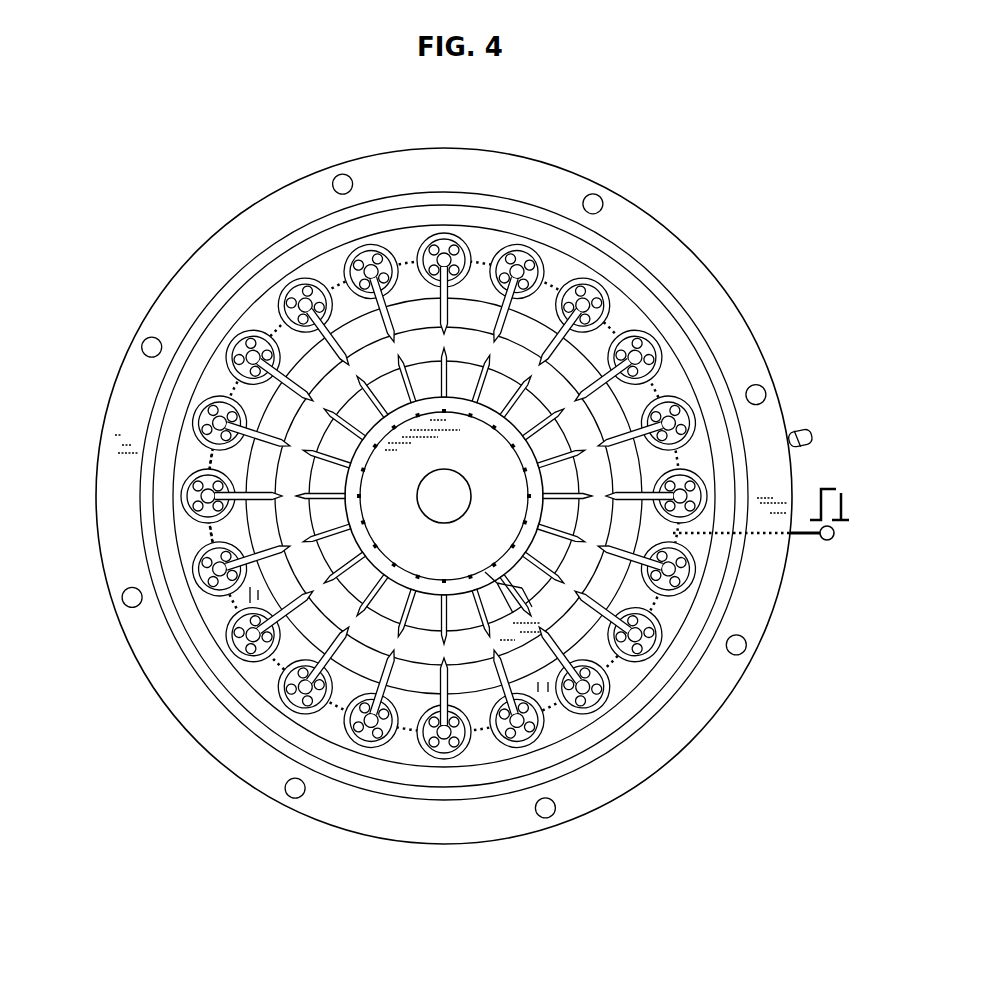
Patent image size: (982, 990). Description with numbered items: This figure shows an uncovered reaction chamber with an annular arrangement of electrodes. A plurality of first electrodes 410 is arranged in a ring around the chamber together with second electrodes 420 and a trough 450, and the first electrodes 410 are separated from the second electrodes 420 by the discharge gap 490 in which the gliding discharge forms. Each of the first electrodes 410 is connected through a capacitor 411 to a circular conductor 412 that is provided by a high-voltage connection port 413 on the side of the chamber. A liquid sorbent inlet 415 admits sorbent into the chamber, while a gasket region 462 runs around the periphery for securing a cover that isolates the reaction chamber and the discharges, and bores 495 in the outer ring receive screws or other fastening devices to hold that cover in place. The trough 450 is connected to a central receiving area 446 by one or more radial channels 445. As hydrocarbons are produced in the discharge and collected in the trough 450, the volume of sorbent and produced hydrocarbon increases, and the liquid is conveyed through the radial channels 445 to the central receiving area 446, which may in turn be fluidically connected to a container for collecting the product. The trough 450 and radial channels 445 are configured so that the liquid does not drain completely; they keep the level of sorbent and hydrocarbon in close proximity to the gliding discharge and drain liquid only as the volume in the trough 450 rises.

The first electrodes 410 is at (258, 504).
The capacitor 411 is at (698, 508).
The circular conductor 412 is at (205, 534).
The high-voltage connection port 413 is at (808, 540).
The liquid sorbent inlet 415 is at (799, 434).
The second electrodes 420 is at (577, 402).
The radial channels 445 is at (530, 606).
The central receiving area 446 is at (439, 509).
The trough 450 is at (588, 568).
The gasket region 462 is at (268, 253).
The discharge gap 490 is at (489, 355).
The bores 495 is at (344, 182).